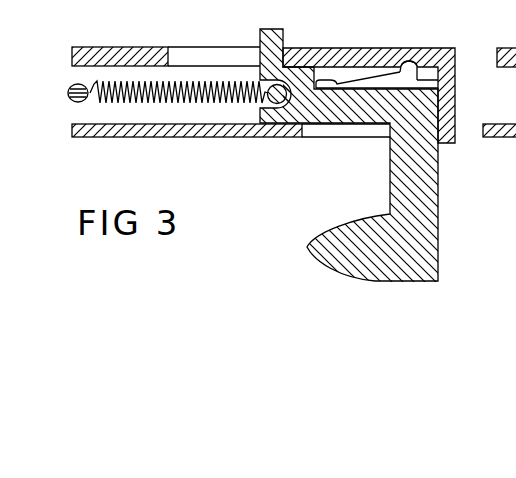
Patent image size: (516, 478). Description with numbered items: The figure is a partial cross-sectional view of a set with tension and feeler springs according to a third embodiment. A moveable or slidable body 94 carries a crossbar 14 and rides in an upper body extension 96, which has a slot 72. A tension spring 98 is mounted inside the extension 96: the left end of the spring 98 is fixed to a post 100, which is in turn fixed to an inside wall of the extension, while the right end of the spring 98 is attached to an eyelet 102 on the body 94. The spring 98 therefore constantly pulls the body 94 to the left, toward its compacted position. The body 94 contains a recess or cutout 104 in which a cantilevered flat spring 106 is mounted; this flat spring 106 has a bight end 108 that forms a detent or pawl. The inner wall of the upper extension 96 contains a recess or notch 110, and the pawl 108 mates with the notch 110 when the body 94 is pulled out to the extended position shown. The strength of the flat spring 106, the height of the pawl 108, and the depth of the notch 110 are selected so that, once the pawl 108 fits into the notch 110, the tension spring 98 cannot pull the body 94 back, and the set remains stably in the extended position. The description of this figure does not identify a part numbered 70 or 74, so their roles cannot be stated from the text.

The crossbar 14 is at (310, 250).
The block 70 is at (284, 33).
The slot 72 is at (335, 130).
The housing wall 74 is at (195, 60).
The slidable body 94 is at (438, 257).
The upper body extension 96 is at (457, 128).
The tension spring 98 is at (162, 103).
The post 100 is at (81, 102).
The eyelet 102 is at (265, 82).
The recess 104 is at (438, 82).
The cantilevered flat spring 106 is at (377, 74).
The bight end 108 is at (402, 68).
The notch 110 is at (427, 50).